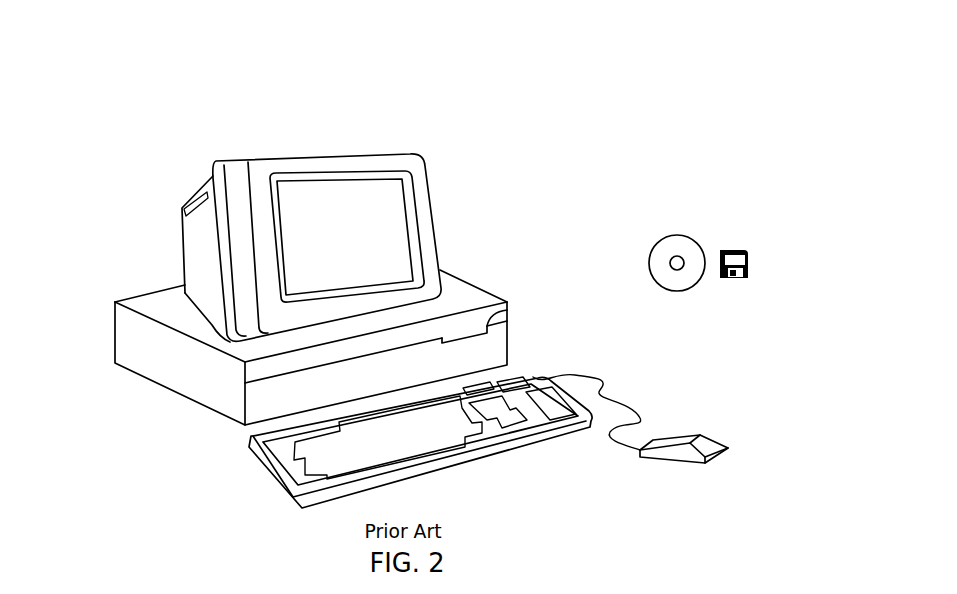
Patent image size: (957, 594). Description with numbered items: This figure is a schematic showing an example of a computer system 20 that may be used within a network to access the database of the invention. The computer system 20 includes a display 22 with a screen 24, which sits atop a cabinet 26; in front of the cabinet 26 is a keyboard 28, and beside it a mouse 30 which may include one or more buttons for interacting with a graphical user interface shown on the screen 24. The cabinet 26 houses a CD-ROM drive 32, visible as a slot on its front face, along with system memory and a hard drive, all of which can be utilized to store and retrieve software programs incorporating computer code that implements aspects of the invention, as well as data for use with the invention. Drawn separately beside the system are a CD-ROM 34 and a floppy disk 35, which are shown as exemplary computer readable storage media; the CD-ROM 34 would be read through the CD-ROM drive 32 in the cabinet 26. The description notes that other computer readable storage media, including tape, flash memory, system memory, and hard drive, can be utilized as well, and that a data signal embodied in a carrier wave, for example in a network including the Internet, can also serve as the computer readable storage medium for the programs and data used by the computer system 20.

The computer system 20 is at (605, 137).
The display 22 is at (436, 243).
The screen 24 is at (411, 197).
The cabinet 26 is at (205, 410).
The keyboard 28 is at (425, 473).
The mouse 30 is at (717, 437).
The CD-ROM drive 32 is at (508, 305).
The CD-ROM 34 is at (675, 234).
The floppy disk 35 is at (735, 250).